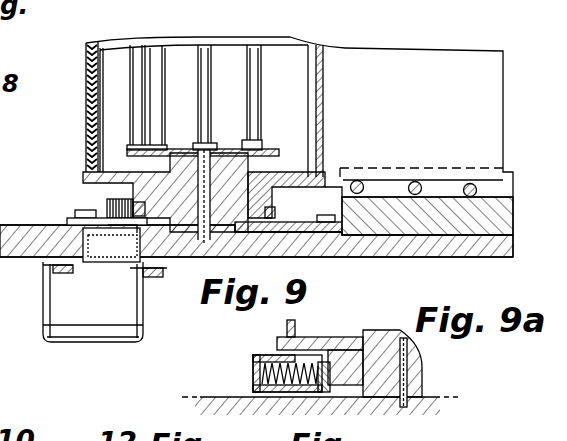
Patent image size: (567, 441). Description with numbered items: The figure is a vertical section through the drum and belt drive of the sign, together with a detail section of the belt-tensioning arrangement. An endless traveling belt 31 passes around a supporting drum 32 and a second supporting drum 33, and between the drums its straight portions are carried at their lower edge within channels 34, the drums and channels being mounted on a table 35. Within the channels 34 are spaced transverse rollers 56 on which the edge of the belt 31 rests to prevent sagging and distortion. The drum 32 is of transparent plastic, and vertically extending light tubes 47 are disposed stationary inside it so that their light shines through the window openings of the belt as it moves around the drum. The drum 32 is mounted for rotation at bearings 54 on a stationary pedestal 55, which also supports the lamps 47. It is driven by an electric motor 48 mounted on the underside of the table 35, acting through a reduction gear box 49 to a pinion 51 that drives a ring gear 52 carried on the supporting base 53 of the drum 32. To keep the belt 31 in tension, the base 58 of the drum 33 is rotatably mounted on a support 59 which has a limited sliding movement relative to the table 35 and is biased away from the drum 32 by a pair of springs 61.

In FIG. 9, the endless traveling belt 31 is at (88, 123).
In FIG. 9, the supporting drum 32 is at (99, 110).
In FIG. 9a, the supporting drum 33 is at (295, 323).
In FIG. 9, the channel 34 is at (437, 195).
In FIG. 9, the table 35 is at (12, 230).
In FIG. 9a, the table 35 is at (437, 399).
In FIG. 9, the light tube 47 is at (143, 114).
In FIG. 9, the electric motor 48 is at (53, 293).
In FIG. 9, the reduction gear box 49 is at (110, 253).
In FIG. 9, the pinion 51 is at (107, 203).
In FIG. 9, the ring gear 52 is at (272, 208).
In FIG. 9, the supporting base 53 is at (92, 165).
In FIG. 9, the bearing 54 is at (252, 200).
In FIG. 9, the stationary pedestal 55 is at (275, 152).
In FIG. 9, the transverse roller 56 is at (367, 182).
In FIG. 9a, the base 58 is at (353, 337).
In FIG. 9a, the support 59 is at (370, 396).
In FIG. 9a, the spring 61 is at (282, 395).